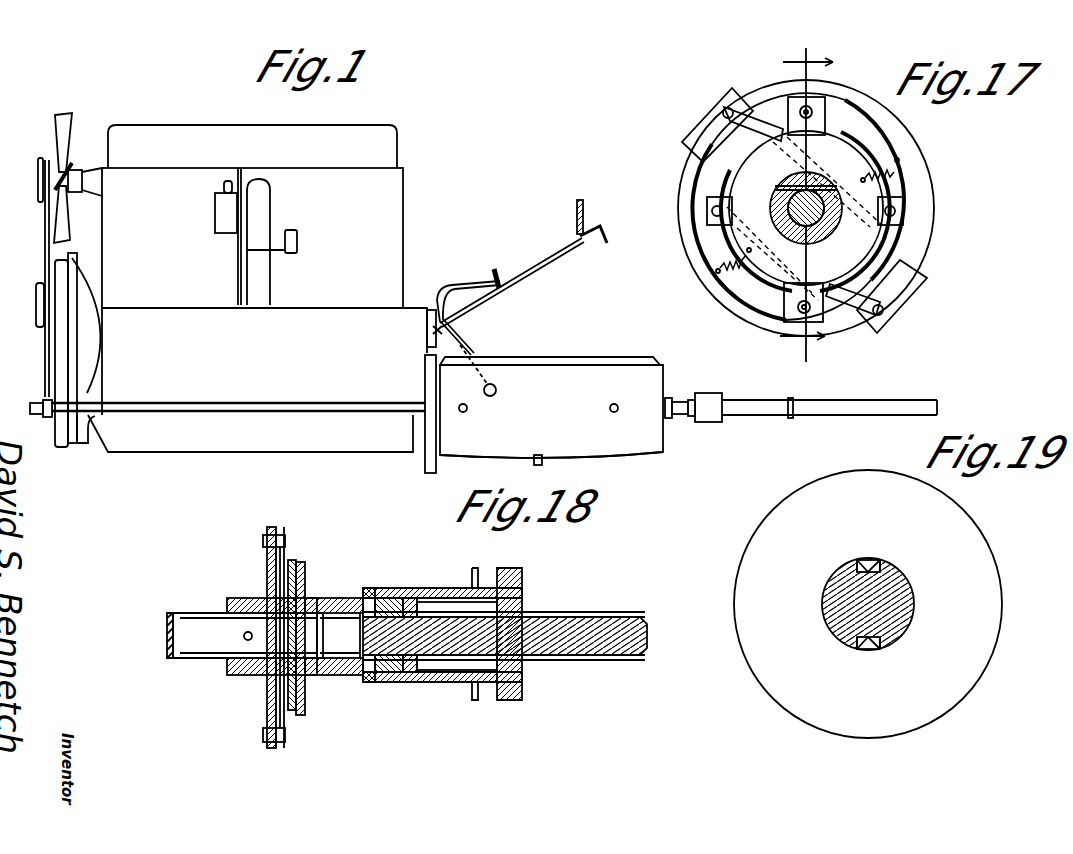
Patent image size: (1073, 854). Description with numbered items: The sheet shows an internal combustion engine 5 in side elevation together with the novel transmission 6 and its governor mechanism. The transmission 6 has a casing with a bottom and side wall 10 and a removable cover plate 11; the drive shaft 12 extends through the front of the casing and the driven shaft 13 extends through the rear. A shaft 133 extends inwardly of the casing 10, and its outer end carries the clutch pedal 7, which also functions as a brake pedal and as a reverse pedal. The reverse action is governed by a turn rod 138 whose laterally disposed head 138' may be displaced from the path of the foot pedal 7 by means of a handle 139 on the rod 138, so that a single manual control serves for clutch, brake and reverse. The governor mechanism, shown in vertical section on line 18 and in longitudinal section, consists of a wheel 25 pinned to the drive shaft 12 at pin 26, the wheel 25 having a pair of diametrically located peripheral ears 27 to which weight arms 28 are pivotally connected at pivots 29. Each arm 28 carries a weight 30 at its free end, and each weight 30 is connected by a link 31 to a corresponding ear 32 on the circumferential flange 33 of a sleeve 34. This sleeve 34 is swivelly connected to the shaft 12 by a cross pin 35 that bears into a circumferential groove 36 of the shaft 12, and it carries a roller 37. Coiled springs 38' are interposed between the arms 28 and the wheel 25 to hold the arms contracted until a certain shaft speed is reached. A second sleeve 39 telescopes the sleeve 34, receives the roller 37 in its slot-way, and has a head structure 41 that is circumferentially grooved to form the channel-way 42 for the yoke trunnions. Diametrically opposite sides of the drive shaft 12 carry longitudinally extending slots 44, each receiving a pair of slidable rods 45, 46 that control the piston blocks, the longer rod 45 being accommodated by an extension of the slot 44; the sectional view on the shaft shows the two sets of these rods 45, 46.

In FIG. 1, the internal combustion engine 5 is at (400, 212).
In FIG. 1, the transmission 6 is at (581, 345).
In FIG. 1, the clutch pedal 7 is at (455, 348).
In FIG. 1, the bottom and side wall 10 is at (632, 445).
In FIG. 1, the removable cover plate 11 is at (622, 362).
In FIG. 1, the drive shaft 12 is at (830, 255).
In FIG. 18, the drive shaft 12 is at (200, 650).
In FIG. 19, the drive shaft 12 is at (905, 608).
In FIG. 1, the driven shaft 13 is at (683, 418).
In FIG. 17, the section line 18 is at (807, 196).
In FIG. 17, the wheel 25 is at (858, 150).
In FIG. 18, the wheel 25 is at (265, 565).
In FIG. 18, the pin 26 is at (247, 640).
In FIG. 17, the peripheral ears 27 is at (818, 108).
In FIG. 17, the weight arms 28 is at (930, 195).
In FIG. 18, the weight arms 28 is at (283, 535).
In FIG. 17, the pivot 29 is at (790, 105).
In FIG. 17, the weight 30 is at (705, 110).
In FIG. 18, the weight 30 is at (285, 755).
In FIG. 17, the link 31 is at (868, 282).
In FIG. 18, the link 31 is at (295, 575).
In FIG. 17, the ear 32 is at (705, 215).
In FIG. 17, the circumferential flange 33 is at (770, 262).
In FIG. 18, the circumferential flange 33 is at (305, 575).
In FIG. 17, the sleeve 34 is at (772, 210).
In FIG. 18, the sleeve 34 is at (365, 598).
In FIG. 17, the cross pin 35 is at (780, 190).
In FIG. 18, the cross pin 35 is at (320, 598).
In FIG. 18, the circumferential groove 36 is at (322, 660).
In FIG. 18, the roller 37 is at (385, 598).
In FIG. 17, the coiled springs 38' is at (841, 201).
In FIG. 18, the sleeve 39 is at (440, 585).
In FIG. 19, the head structure 41 is at (985, 548).
In FIG. 18, the channel-way 42 is at (488, 698).
In FIG. 18, the longitudinally extending slots 44 is at (392, 675).
In FIG. 18, the slidable rod 45 is at (585, 658).
In FIG. 19, the slidable rod 45 is at (878, 560).
In FIG. 18, the slidable rod 46 is at (580, 615).
In FIG. 19, the slidable rod 46 is at (860, 560).
In FIG. 1, the shaft 133 is at (497, 390).
In FIG. 1, the turn rod 138 is at (512, 275).
In FIG. 1, the laterally disposed head 138' is at (395, 333).
In FIG. 1, the handle 139 is at (608, 225).